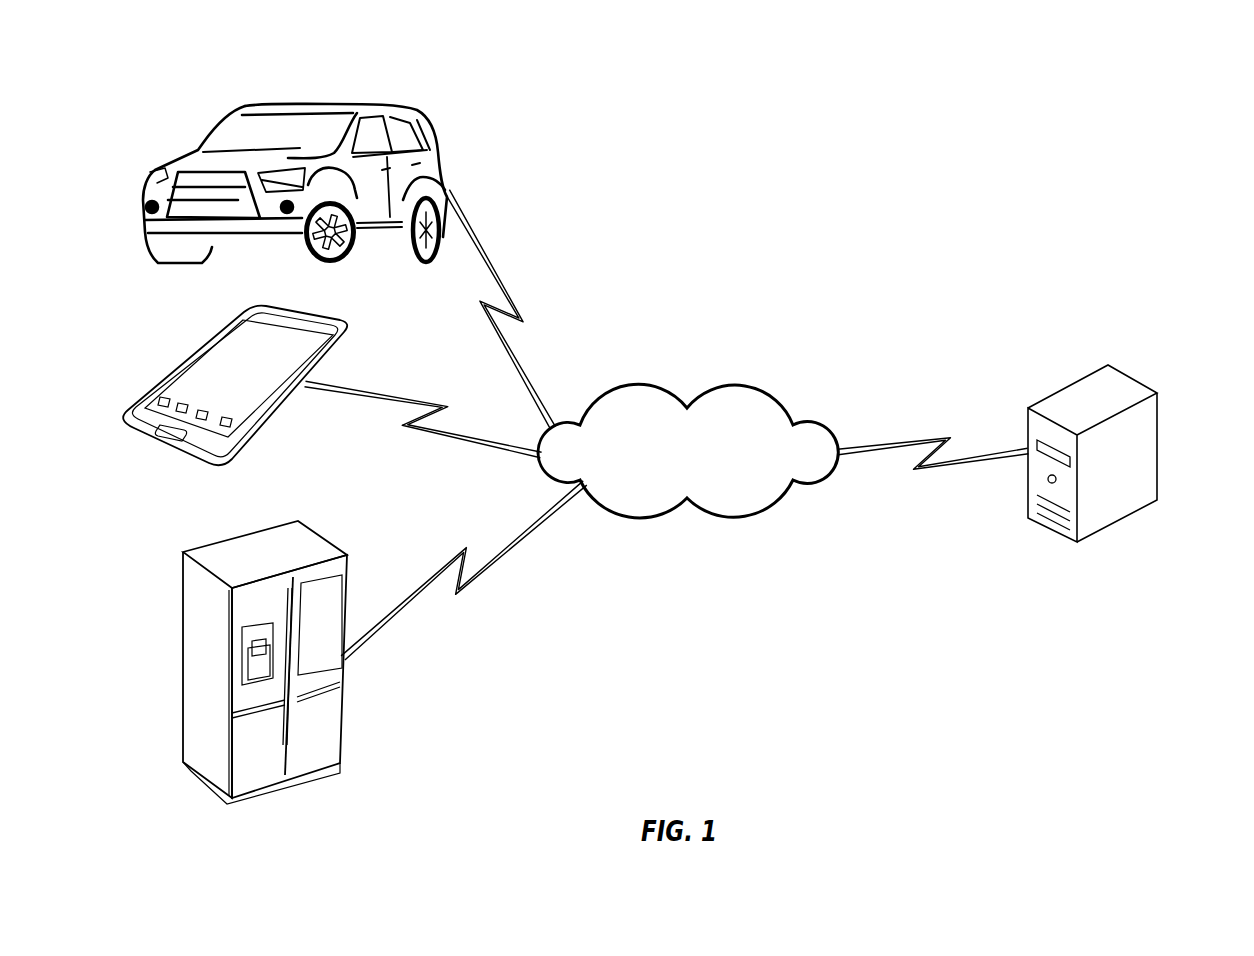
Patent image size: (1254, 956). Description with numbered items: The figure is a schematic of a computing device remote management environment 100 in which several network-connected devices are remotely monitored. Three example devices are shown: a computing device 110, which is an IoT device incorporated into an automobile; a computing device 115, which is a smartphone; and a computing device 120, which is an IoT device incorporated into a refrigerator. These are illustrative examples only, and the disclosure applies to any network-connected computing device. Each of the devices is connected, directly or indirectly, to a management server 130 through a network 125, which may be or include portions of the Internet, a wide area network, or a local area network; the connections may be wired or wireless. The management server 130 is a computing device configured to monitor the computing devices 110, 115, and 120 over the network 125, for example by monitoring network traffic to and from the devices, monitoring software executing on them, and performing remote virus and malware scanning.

The computing device remote management environment 100 is at (1168, 89).
The computing device 110 is at (297, 104).
The computing device 115 is at (310, 312).
The computing device 120 is at (297, 521).
The network 125 is at (727, 396).
The management server 130 is at (1133, 379).